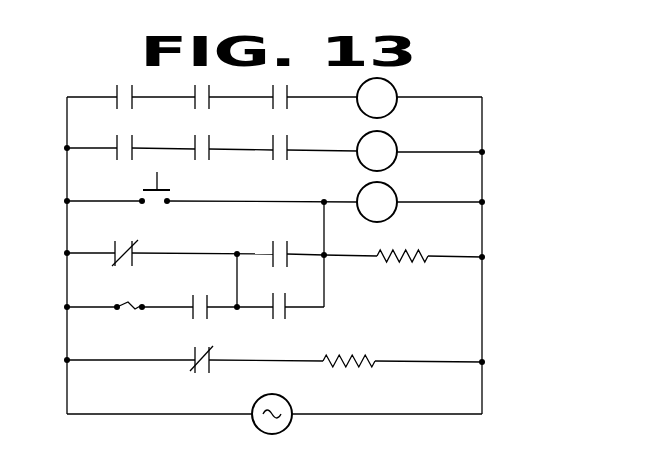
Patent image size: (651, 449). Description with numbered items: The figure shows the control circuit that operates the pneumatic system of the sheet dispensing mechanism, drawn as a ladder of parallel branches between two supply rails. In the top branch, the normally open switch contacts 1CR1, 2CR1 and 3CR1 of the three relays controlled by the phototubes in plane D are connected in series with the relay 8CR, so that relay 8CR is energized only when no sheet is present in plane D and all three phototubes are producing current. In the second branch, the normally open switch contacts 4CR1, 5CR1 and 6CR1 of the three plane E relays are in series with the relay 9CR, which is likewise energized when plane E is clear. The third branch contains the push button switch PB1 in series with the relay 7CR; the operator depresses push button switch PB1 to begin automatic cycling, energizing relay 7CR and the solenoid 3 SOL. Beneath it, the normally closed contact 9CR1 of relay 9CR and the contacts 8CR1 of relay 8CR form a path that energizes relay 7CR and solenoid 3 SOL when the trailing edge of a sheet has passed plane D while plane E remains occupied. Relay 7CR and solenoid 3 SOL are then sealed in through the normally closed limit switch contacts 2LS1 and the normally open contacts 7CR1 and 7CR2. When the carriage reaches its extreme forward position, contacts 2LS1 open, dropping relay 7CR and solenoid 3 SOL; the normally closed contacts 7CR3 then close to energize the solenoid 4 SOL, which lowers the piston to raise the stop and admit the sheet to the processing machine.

The normally open switch contacts 1CR1 is at (115, 87).
The normally open switch contacts 2CR1 is at (194, 88).
The normally open switch contacts 3CR1 is at (272, 88).
The normally open switch contacts 4CR1 is at (116, 138).
The normally open switch contacts 5CR1 is at (194, 138).
The normally open switch contacts 6CR1 is at (272, 138).
The relay 8CR is at (396, 91).
The relay 9CR is at (396, 144).
The relay 7CR is at (396, 196).
The push button switch PB1 is at (141, 177).
The normally closed contact 9CR1 is at (138, 241).
The contacts 8CR1 is at (288, 241).
The solenoid 3 SOL is at (377, 251).
The normally open contacts 7CR1 is at (192, 296).
The normally open contacts 7CR2 is at (273, 319).
The normally closed contacts 2LS1 is at (142, 307).
The normally closed contacts 7CR3 is at (209, 371).
The solenoid 4 SOL is at (324, 361).